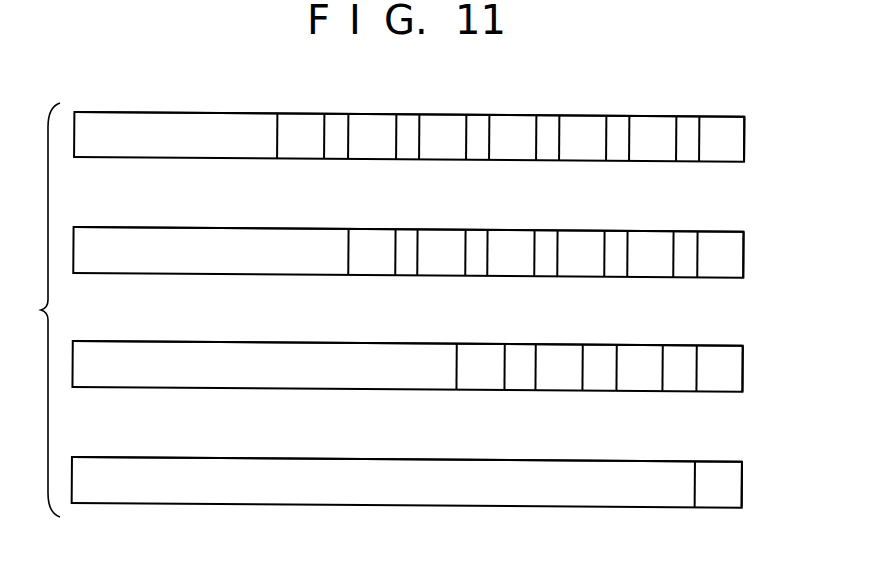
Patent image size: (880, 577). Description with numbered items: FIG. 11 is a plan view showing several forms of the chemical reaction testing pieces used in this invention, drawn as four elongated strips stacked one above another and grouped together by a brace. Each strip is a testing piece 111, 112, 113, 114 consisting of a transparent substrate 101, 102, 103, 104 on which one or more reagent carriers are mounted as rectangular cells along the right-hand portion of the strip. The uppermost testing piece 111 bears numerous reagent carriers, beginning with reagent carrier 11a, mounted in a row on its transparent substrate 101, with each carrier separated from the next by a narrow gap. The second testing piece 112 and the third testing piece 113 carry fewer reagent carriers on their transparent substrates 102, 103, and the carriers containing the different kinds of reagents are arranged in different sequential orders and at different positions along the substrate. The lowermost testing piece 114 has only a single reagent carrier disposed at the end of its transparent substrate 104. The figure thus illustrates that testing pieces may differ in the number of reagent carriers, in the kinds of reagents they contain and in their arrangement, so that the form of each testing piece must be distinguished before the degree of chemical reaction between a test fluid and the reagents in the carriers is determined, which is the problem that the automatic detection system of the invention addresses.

The transparent substrate 101 is at (222, 157).
The transparent substrate 102 is at (262, 273).
The transparent substrate 103 is at (322, 387).
The transparent substrate 104 is at (395, 503).
The testing piece 111 is at (182, 115).
The testing piece 112 is at (183, 230).
The testing piece 113 is at (187, 343).
The testing piece 114 is at (187, 458).
The reagent carrier 11a is at (299, 116).